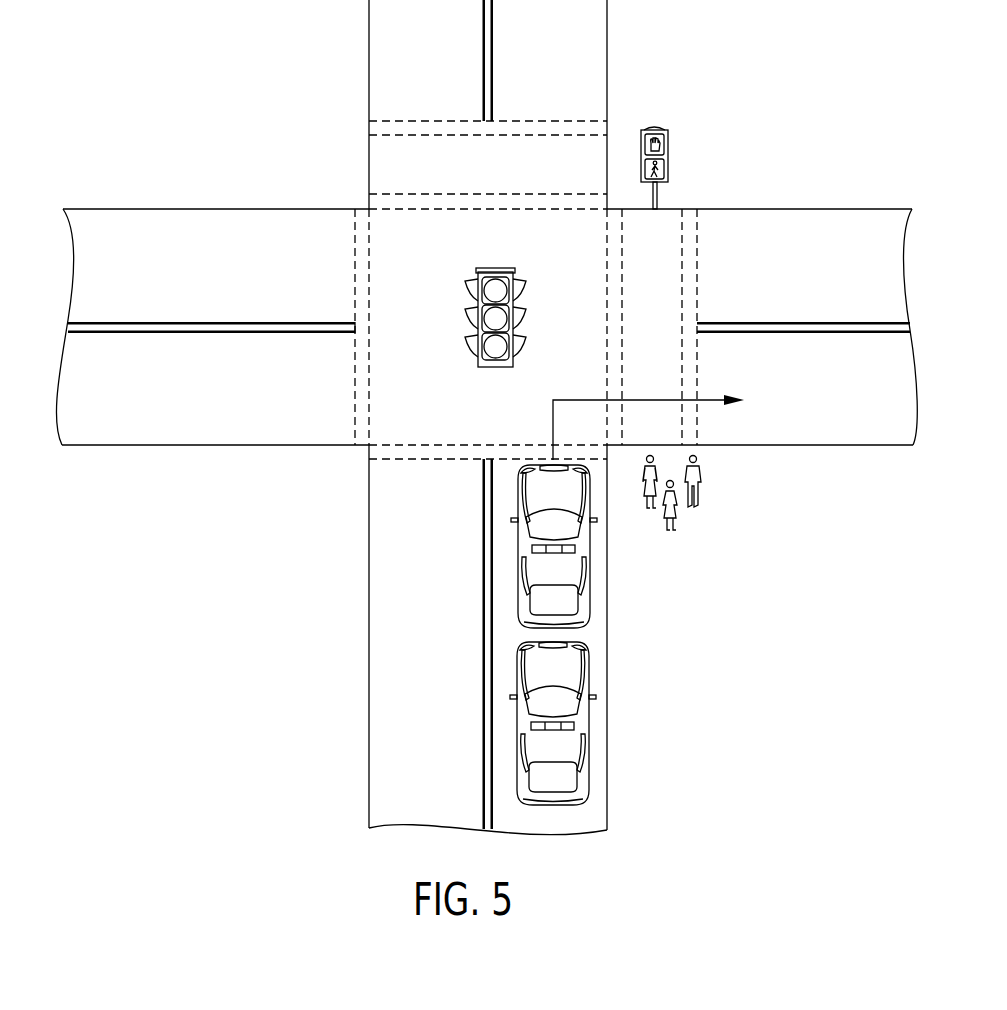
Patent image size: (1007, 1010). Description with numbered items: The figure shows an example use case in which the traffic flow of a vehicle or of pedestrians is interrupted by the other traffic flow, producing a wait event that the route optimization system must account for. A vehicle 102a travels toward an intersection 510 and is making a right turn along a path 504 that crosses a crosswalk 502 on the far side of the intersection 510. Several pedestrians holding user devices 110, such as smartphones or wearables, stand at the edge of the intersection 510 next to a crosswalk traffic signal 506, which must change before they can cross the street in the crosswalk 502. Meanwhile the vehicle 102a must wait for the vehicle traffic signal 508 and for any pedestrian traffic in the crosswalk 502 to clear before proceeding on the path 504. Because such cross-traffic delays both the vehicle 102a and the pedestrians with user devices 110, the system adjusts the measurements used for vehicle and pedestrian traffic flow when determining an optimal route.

The vehicle 102a is at (588, 585).
The user device 110 is at (702, 495).
The crosswalk 502 is at (670, 446).
The path 504 is at (566, 399).
The crosswalk traffic signal 506 is at (668, 133).
The vehicle traffic signal 508 is at (513, 283).
The intersection 510 is at (511, 408).